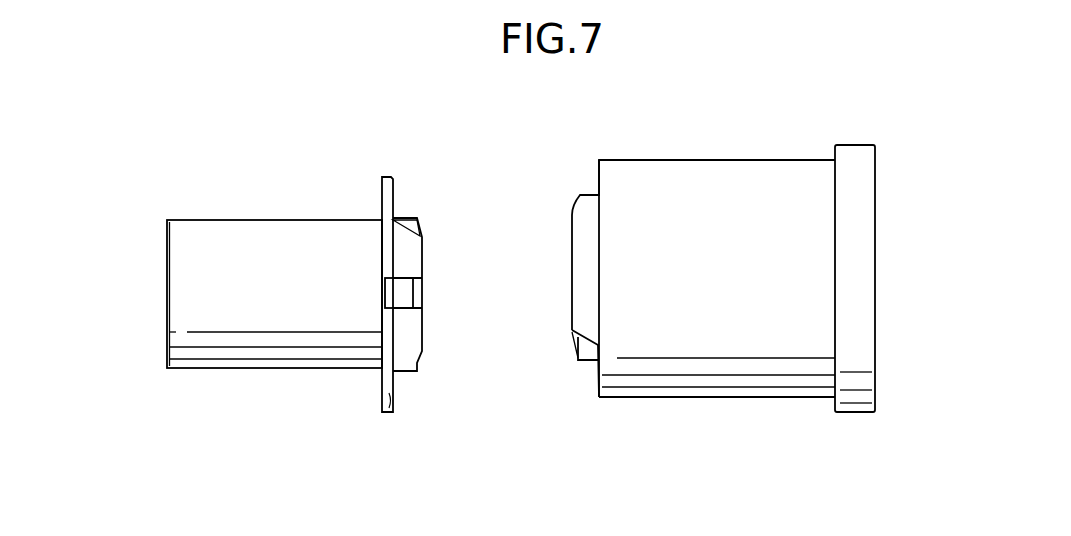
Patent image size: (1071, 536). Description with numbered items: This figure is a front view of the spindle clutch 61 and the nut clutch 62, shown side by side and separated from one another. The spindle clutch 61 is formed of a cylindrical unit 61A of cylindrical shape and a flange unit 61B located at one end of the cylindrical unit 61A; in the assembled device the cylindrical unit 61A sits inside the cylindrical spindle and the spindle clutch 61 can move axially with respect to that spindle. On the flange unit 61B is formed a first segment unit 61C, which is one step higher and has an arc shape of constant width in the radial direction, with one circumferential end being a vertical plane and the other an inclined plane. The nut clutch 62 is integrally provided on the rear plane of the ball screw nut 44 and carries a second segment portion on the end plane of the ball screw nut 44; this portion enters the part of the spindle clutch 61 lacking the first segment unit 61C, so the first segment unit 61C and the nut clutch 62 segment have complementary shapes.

The spindle clutch 61 is at (168, 180).
The cylindrical unit 61A is at (258, 350).
The flange unit 61B is at (383, 413).
The first segment unit 61C is at (424, 334).
The ball screw nut 44 is at (806, 146).
The nut clutch 62 is at (578, 282).